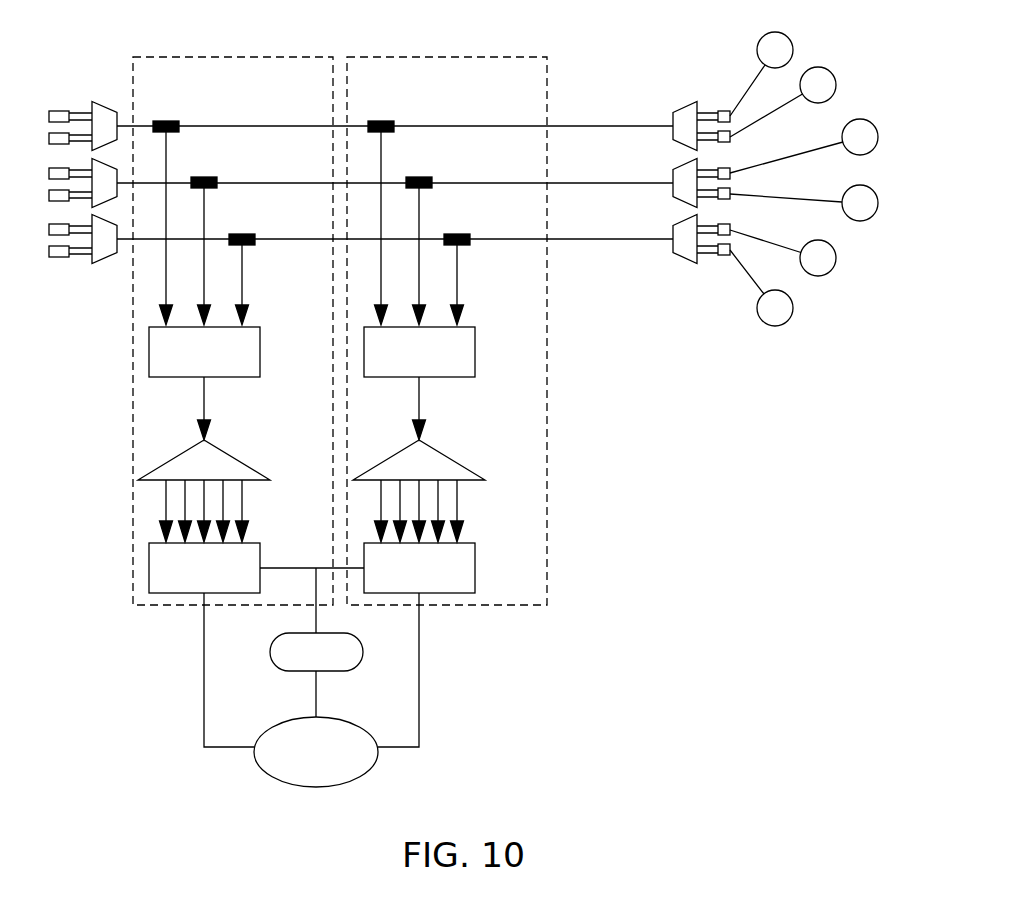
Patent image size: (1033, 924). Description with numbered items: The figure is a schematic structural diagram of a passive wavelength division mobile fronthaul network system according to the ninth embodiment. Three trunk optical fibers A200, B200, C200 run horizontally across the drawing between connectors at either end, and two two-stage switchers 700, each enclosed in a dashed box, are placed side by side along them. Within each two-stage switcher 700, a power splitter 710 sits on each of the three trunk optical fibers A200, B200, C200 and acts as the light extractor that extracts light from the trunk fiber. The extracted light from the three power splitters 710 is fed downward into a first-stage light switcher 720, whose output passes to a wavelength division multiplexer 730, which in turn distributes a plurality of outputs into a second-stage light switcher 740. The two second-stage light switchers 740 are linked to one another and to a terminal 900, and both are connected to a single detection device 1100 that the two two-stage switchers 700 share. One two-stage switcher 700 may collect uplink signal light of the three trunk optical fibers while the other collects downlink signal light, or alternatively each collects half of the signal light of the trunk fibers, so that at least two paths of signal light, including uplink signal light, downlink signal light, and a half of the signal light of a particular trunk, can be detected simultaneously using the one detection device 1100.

The two-stage switcher 700 is at (132, 443).
The power splitter 710 is at (166, 121).
The first-stage light switcher 720 is at (260, 342).
The wavelength division multiplexer 730 is at (235, 457).
The second-stage light switcher 740 is at (260, 542).
The terminal 900 is at (360, 642).
The detection device 1100 is at (372, 765).
The trunk optical fiber A200 is at (557, 126).
The trunk optical fiber B200 is at (570, 183).
The trunk optical fiber C200 is at (573, 239).